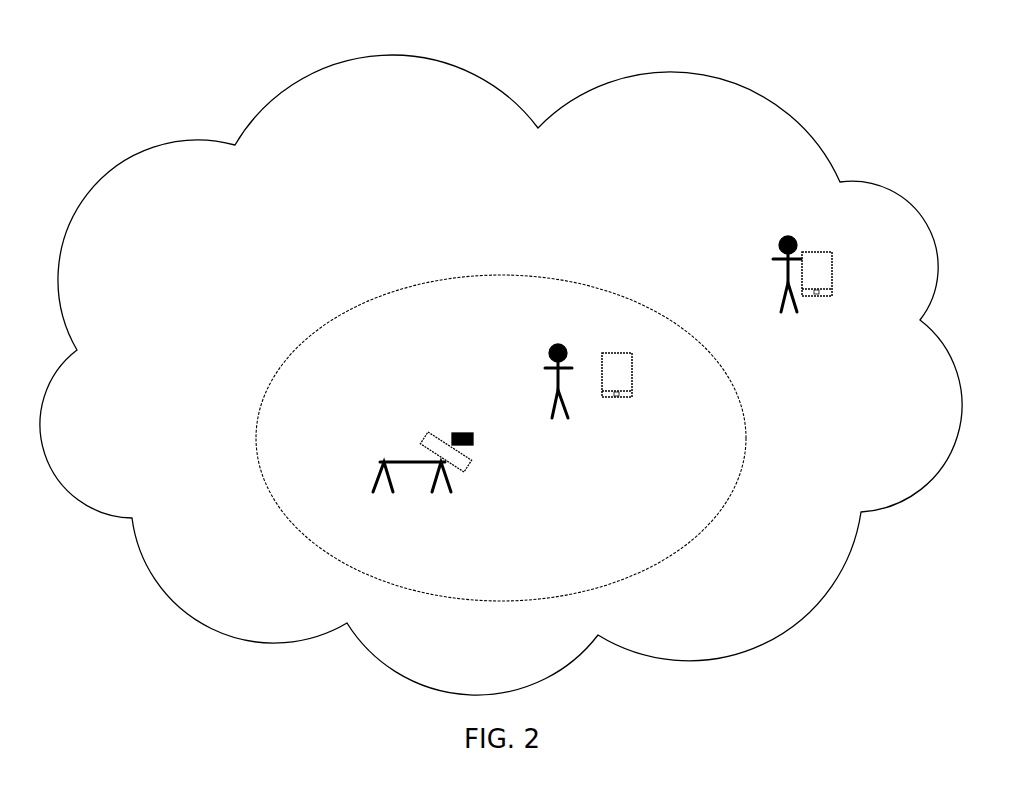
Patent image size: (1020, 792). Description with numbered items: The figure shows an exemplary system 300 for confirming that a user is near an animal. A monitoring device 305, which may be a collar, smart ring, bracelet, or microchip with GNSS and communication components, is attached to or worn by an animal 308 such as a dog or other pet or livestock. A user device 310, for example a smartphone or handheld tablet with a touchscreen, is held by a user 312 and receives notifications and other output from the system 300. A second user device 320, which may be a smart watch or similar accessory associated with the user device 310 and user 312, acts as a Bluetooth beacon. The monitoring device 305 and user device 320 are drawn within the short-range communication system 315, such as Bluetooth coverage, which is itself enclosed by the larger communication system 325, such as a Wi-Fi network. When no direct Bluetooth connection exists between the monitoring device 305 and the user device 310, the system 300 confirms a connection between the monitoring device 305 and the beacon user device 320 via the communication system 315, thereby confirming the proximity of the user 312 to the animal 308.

The system 300 is at (150, 108).
The communication system 325 is at (267, 108).
The communication system 315 is at (308, 337).
The monitoring device 305 is at (423, 435).
The animal 308 is at (395, 455).
The user device 320 is at (597, 363).
The user 312 is at (775, 250).
The user device 310 is at (835, 253).